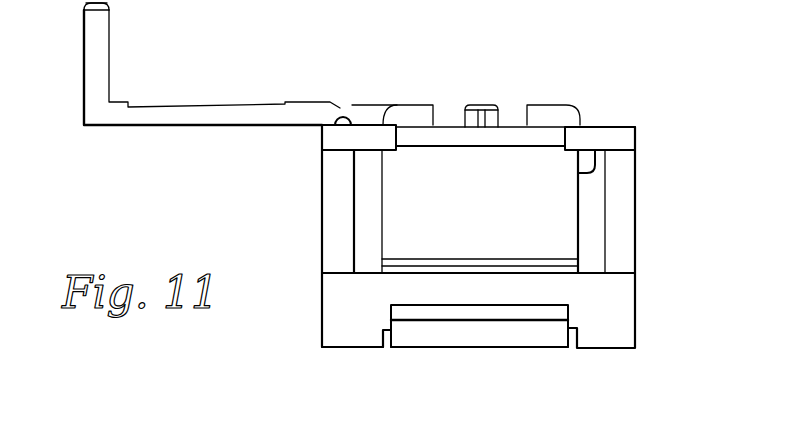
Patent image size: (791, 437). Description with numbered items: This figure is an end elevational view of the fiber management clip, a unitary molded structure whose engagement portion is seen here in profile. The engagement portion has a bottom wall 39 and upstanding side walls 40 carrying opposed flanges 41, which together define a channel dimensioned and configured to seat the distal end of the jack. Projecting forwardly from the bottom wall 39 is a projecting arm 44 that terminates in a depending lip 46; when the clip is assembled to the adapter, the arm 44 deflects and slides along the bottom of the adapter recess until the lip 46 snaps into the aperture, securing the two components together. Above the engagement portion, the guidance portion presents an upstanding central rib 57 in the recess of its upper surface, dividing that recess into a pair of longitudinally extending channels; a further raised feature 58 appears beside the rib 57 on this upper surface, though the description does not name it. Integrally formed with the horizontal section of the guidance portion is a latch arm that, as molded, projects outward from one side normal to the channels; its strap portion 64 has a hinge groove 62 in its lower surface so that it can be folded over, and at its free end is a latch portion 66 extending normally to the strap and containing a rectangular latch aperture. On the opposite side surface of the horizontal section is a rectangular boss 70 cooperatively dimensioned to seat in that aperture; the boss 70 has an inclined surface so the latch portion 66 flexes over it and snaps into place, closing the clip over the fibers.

The bottom wall 39 is at (379, 311).
The side walls 40 is at (637, 215).
The opposed flanges 41 is at (583, 131).
The projecting arm 44 is at (568, 318).
The depending lip 46 is at (548, 338).
The upstanding central rib 57 is at (490, 107).
The raised block 58 is at (512, 117).
The hinge groove 62 is at (340, 117).
The strap portion 64 is at (218, 108).
The latch portion 66 is at (84, 45).
The rectangular boss 70 is at (595, 160).